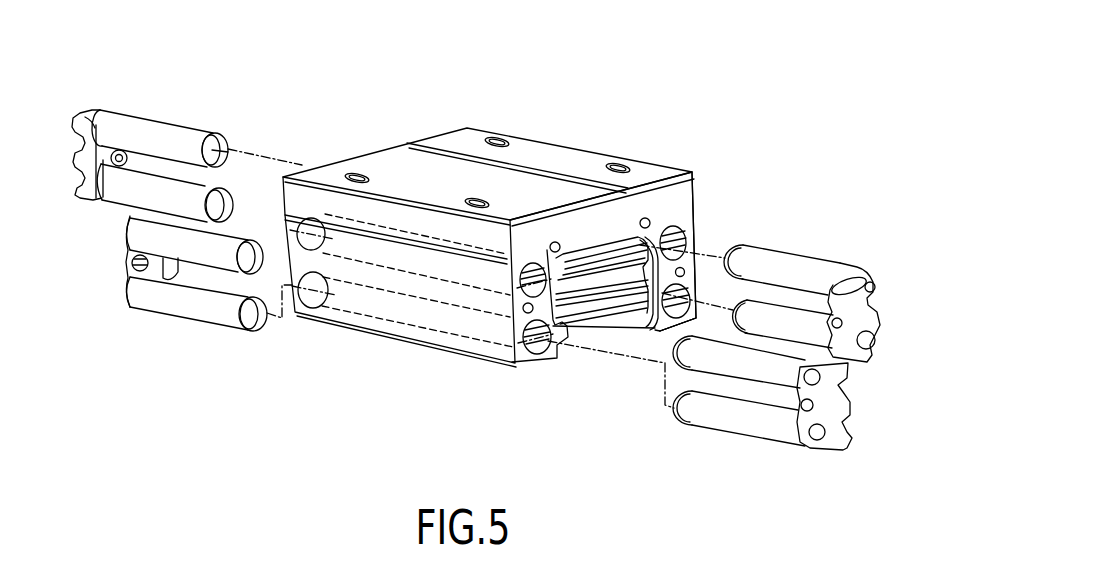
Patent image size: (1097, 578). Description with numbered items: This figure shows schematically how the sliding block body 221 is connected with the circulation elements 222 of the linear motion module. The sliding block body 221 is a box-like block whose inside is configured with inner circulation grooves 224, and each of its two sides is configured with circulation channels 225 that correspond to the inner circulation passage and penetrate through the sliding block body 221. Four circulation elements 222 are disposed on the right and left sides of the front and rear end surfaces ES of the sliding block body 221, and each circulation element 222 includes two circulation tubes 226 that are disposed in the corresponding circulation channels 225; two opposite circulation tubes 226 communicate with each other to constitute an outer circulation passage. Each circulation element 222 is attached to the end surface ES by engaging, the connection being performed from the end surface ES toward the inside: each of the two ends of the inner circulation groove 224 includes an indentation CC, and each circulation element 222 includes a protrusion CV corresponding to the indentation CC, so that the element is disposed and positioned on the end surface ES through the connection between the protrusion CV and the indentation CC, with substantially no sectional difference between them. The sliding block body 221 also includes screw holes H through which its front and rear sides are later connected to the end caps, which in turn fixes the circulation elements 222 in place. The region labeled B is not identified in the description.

The sliding block body 221 is at (453, 138).
The circulation element 222 is at (128, 90).
The inner circulation groove 224 is at (632, 262).
The circulation channel 225 is at (538, 349).
The circulation tube 226 is at (193, 135).
The rail channel B is at (598, 275).
The screw hole H is at (648, 216).
The end surface ES is at (680, 205).
The indentation CC is at (693, 273).
The protrusion CV is at (834, 302).